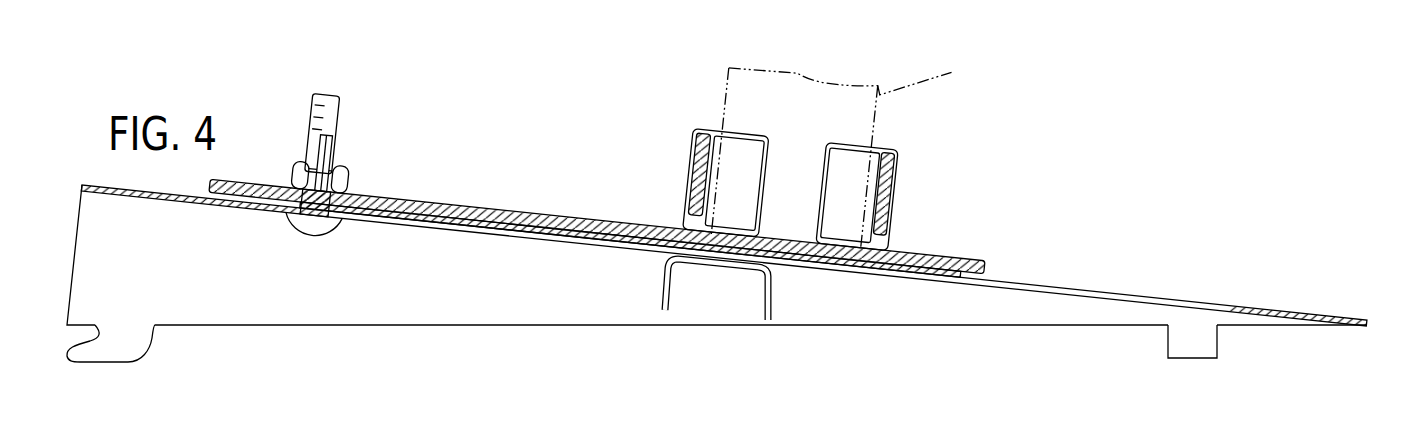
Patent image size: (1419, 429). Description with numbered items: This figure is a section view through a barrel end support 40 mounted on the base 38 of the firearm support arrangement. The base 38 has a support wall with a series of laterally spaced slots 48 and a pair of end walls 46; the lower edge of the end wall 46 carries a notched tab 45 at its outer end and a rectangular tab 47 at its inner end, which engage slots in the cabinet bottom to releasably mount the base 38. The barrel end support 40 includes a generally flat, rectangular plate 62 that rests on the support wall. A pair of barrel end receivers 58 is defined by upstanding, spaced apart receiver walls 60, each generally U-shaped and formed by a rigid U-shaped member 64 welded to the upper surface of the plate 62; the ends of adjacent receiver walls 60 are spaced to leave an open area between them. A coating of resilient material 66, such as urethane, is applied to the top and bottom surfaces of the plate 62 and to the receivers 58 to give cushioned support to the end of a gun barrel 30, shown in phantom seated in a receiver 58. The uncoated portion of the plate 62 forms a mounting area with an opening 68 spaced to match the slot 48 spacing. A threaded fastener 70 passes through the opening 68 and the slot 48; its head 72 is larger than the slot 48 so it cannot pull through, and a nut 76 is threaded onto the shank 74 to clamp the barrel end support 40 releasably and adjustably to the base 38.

The gun barrel 30 is at (851, 153).
The base 38 is at (714, 224).
The barrel end support 40 is at (661, 164).
The notched tab 45 is at (108, 352).
The end wall 46 is at (535, 290).
The rectangular tab 47 is at (1193, 345).
The slot 48 is at (1270, 288).
The barrel end receiver 58 is at (854, 152).
The receiver wall 60 is at (698, 123).
The plate 62 is at (253, 183).
The U-shaped member 64 is at (895, 192).
The resilient material 66 is at (538, 208).
The opening 68 is at (325, 197).
The threaded fastener 70 is at (377, 107).
The head 72 is at (327, 200).
The shank 74 is at (340, 128).
The nut 76 is at (345, 176).